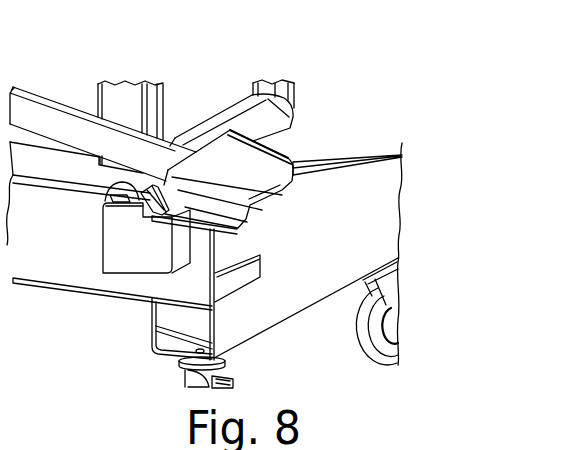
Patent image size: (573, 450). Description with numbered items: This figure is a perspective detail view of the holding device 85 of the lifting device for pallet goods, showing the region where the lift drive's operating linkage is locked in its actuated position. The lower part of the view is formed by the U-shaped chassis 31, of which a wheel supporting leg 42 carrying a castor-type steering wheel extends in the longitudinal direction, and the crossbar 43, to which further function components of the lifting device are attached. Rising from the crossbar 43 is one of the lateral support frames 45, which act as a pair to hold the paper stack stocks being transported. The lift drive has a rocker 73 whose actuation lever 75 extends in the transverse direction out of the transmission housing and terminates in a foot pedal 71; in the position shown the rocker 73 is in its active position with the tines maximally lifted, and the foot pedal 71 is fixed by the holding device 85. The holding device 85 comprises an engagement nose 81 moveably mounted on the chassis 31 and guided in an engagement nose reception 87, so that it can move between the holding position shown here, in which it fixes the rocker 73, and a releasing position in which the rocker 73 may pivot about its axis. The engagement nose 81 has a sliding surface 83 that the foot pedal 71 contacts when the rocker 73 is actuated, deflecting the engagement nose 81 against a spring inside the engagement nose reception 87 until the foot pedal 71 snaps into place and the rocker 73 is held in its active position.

The chassis 31 is at (278, 338).
The wheel supporting leg 42 is at (307, 295).
The crossbar 43 is at (47, 255).
The lateral support frame 45 is at (117, 95).
The foot pedal 71 is at (248, 180).
The rocker 73 is at (55, 120).
The actuation lever 75 is at (77, 124).
The engagement nose 81 is at (108, 188).
The sliding surface 83 is at (174, 192).
The holding device 85 is at (193, 112).
The engagement nose reception 87 is at (120, 255).